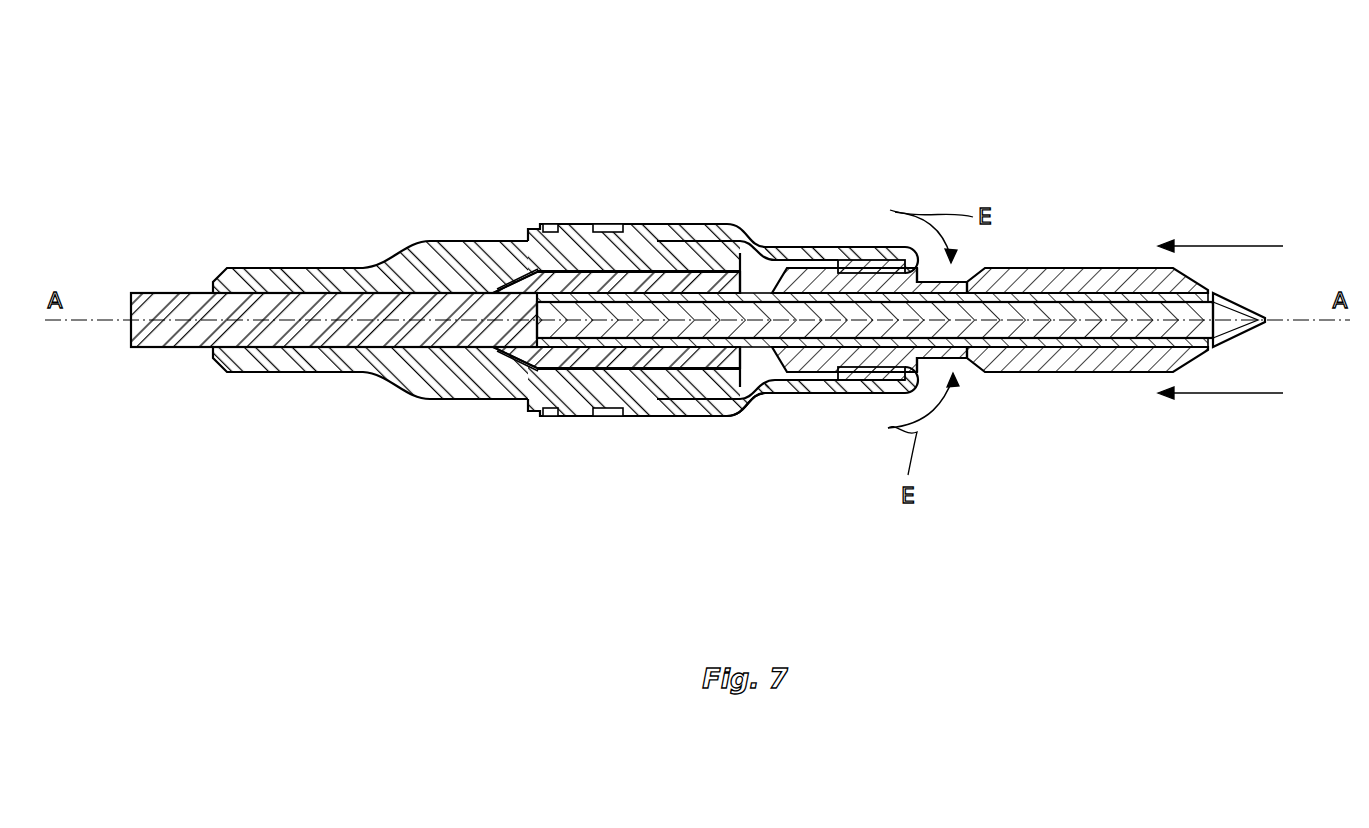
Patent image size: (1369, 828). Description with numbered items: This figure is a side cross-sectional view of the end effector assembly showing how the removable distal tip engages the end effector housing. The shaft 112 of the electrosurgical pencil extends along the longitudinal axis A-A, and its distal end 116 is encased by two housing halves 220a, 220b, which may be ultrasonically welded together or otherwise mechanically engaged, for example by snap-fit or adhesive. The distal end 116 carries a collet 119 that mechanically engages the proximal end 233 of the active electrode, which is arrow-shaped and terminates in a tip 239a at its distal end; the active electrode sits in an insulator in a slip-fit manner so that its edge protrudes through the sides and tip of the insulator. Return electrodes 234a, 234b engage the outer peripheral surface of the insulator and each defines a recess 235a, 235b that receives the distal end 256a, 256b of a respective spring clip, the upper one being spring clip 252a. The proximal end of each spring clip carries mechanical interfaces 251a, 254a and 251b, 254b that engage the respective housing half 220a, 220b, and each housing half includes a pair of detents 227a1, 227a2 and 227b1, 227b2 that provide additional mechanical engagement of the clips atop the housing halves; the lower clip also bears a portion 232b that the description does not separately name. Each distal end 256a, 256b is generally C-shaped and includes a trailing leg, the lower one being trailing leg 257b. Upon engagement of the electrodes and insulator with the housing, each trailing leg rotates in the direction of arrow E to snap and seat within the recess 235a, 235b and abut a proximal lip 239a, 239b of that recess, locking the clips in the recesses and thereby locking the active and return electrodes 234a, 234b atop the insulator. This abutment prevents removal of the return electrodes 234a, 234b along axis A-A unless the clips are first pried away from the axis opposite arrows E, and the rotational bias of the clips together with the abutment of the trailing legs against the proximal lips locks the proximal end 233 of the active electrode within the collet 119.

The shaft 112 is at (148, 290).
The distal end 116 is at (636, 292).
The collet 119 is at (497, 290).
The housing half 220a is at (453, 239).
The housing half 220b is at (467, 400).
The detent 227a1 is at (573, 223).
The detent 227a2 is at (637, 223).
The detent 227b1 is at (567, 417).
The detent 227b2 is at (643, 417).
The lower bent portion 232b is at (790, 393).
The proximal end 233 is at (1062, 290).
The return electrode 234a is at (1117, 280).
The return electrode 234b is at (1128, 367).
The recess 235a is at (970, 268).
The recess 235b is at (968, 372).
The tip 239a is at (853, 260).
The proximal lip 239b is at (845, 380).
The mechanical interface 251a is at (550, 223).
The mechanical interface 251b is at (548, 417).
The spring clip 252a is at (810, 247).
The mechanical interface 254a is at (613, 223).
The mechanical interface 254b is at (610, 417).
The distal end 256a is at (905, 255).
The distal end 256b is at (962, 380).
The trailing leg 257b is at (848, 373).